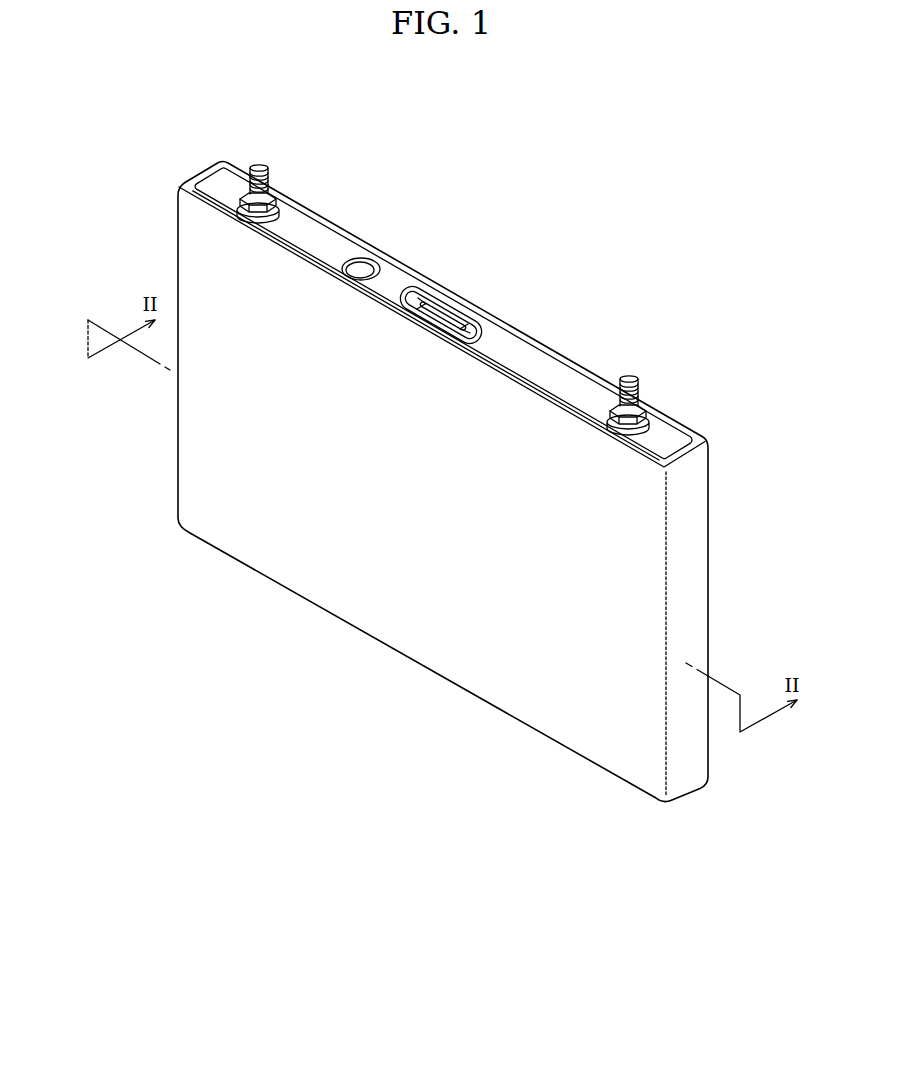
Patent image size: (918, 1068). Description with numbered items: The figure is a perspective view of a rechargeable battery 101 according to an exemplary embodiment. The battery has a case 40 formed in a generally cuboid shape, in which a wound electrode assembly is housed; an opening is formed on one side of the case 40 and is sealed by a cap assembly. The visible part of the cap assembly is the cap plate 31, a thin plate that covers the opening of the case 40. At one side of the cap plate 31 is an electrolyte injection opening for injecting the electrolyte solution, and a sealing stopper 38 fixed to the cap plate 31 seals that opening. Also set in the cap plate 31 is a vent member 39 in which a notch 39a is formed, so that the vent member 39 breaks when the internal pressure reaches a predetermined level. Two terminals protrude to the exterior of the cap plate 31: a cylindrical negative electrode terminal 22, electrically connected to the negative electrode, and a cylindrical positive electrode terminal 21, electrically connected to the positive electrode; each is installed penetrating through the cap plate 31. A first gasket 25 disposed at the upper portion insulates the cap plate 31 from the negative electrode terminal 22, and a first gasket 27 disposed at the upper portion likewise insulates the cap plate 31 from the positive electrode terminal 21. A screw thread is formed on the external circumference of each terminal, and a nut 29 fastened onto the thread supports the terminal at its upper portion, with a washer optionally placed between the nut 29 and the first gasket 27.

The rechargeable battery 101 is at (532, 312).
The case 40 is at (400, 628).
The cap plate 31 is at (405, 269).
The sealing stopper 38 is at (359, 266).
The vent member 39 is at (436, 308).
The notch 39a is at (454, 317).
The negative electrode terminal 22 is at (261, 165).
The first gasket 25 is at (271, 218).
The positive electrode terminal 21 is at (626, 378).
The nut 29 is at (638, 407).
The first gasket 27 is at (646, 428).